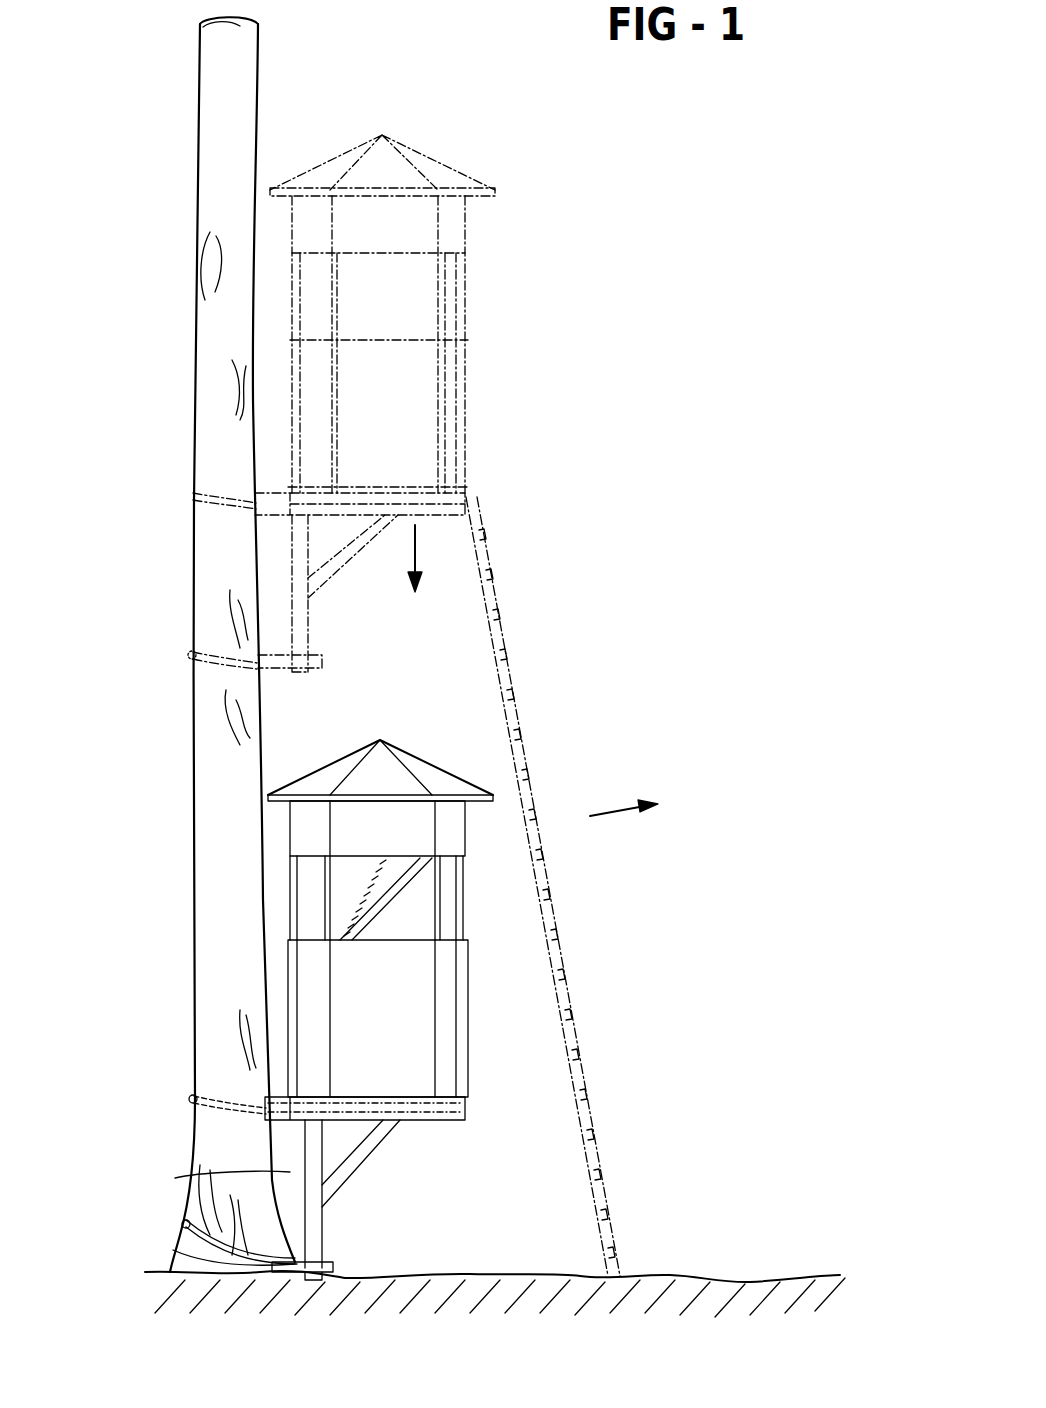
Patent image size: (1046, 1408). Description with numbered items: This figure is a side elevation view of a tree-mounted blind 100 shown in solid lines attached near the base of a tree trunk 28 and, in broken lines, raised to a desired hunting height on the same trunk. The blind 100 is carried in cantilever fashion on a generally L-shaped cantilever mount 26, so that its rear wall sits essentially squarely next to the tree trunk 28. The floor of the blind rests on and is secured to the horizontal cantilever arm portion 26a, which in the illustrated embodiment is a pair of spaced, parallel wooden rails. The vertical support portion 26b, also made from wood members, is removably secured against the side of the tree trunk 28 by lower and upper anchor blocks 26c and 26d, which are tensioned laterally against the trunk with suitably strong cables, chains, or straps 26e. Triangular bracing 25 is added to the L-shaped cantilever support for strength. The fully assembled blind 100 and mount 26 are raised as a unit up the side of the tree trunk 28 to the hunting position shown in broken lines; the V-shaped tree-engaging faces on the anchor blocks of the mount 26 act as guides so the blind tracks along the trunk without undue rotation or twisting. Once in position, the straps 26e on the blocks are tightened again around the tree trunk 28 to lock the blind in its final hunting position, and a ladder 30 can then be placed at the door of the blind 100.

The tree trunk 28 is at (195, 727).
The ladder 30 is at (500, 640).
The tree-mounted blind 100 is at (478, 996).
The L-shaped cantilever mount 26 is at (306, 1143).
The horizontal cantilever arm portion 26a is at (440, 1121).
The vertical support portion 26b is at (305, 1153).
The lower anchor block 26c is at (285, 1224).
The upper anchor block 26d is at (265, 1112).
The straps 26e is at (192, 1097).
The triangular bracing 25 is at (350, 1166).